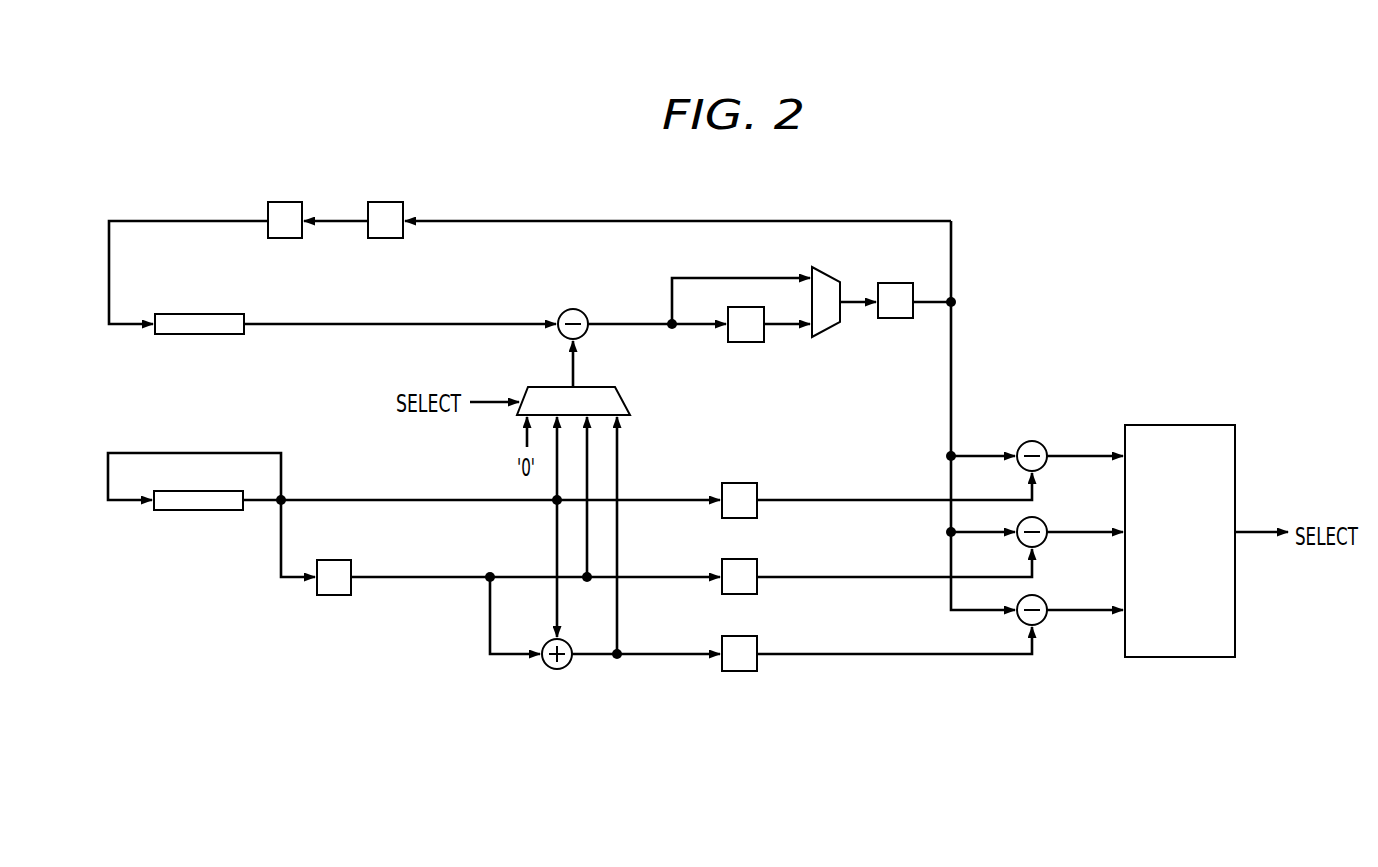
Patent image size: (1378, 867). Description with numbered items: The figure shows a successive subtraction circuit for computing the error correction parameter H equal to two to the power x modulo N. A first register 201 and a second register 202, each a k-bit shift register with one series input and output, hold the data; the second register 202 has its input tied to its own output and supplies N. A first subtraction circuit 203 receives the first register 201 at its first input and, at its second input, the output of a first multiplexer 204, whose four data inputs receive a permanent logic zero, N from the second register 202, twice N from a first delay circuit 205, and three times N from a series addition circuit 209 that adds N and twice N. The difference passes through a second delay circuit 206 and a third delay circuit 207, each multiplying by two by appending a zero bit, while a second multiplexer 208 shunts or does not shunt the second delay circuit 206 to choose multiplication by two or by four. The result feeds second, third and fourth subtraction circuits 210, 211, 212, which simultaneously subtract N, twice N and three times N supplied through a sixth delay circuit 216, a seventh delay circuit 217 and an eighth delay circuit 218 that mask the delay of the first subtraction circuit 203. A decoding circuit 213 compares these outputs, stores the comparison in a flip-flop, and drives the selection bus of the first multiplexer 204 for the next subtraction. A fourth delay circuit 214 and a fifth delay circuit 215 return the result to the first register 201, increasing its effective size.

The first register 201 is at (197, 336).
The second register 202 is at (197, 512).
The first subtraction circuit 203 is at (574, 308).
The first multiplexer 204 is at (627, 403).
The first delay circuit 205 is at (333, 597).
The second delay circuit 206 is at (746, 343).
The third delay circuit 207 is at (895, 319).
The second multiplexer 208 is at (830, 276).
The series addition circuit 209 is at (557, 670).
The second subtraction circuit 210 is at (1034, 441).
The third subtraction circuit 211 is at (1045, 521).
The fourth subtraction circuit 212 is at (1045, 622).
The decoding circuit 213 is at (1181, 424).
The fourth delay circuit 214 is at (385, 240).
The fifth delay circuit 215 is at (285, 240).
The sixth delay circuit 216 is at (742, 481).
The seventh delay circuit 217 is at (758, 563).
The eighth delay circuit 218 is at (758, 641).